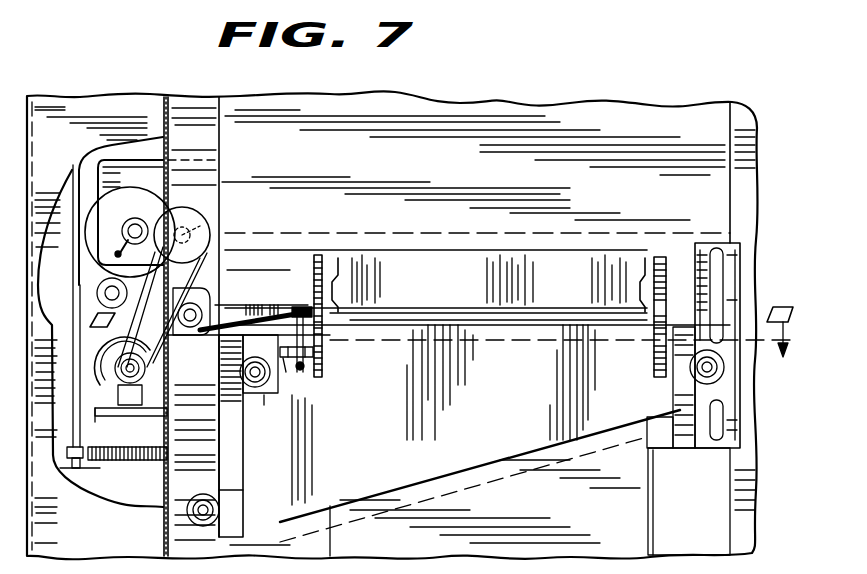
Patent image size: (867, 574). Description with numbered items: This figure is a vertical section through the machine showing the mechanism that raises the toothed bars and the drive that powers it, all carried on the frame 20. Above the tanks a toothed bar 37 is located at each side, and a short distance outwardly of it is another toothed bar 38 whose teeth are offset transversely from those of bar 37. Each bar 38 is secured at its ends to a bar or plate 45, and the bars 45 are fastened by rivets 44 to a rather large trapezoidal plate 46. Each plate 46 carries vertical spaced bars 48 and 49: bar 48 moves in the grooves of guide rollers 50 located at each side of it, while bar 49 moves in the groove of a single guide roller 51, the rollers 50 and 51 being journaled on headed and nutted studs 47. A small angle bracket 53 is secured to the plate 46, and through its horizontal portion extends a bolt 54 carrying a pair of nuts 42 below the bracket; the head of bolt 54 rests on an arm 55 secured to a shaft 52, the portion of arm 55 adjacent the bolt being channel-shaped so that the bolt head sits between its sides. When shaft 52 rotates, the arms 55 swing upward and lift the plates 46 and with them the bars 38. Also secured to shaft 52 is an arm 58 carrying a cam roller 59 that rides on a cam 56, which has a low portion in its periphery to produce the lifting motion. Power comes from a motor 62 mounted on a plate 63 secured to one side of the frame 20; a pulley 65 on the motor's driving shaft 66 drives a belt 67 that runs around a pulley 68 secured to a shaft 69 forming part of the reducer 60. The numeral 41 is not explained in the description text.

The frame 20 is at (106, 503).
The toothed bar 37 is at (339, 262).
The bar 38 is at (316, 255).
The pin 41 is at (300, 368).
The nuts 42 is at (248, 365).
The rivets 44 is at (318, 371).
The bar or plate 45 is at (323, 346).
The trapezoidal plate 46 is at (500, 440).
The headed and nutted stud 47 is at (220, 510).
The vertical bar 48 is at (241, 490).
The vertical bar 49 is at (685, 397).
The grooved guide roller 50 is at (264, 405).
The grooved guide roller 51 is at (726, 372).
The shaft 52 is at (185, 333).
The angle bracket 53 is at (286, 372).
The bolt 54 is at (300, 307).
The arm 55 is at (242, 318).
The cam 56 is at (70, 182).
The arm 58 is at (116, 322).
The cam roller 59 is at (97, 288).
The reducer 60 is at (117, 165).
The motor 62 is at (106, 382).
The plate 63 is at (103, 418).
The pulley 65 is at (165, 392).
The driving shaft 66 is at (145, 373).
The belt 67 is at (196, 278).
The pulley 68 is at (156, 224).
The shaft 69 is at (204, 226).